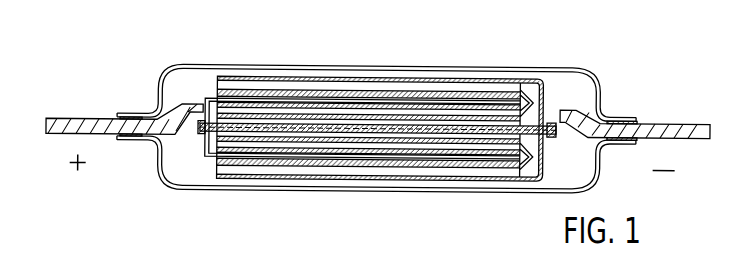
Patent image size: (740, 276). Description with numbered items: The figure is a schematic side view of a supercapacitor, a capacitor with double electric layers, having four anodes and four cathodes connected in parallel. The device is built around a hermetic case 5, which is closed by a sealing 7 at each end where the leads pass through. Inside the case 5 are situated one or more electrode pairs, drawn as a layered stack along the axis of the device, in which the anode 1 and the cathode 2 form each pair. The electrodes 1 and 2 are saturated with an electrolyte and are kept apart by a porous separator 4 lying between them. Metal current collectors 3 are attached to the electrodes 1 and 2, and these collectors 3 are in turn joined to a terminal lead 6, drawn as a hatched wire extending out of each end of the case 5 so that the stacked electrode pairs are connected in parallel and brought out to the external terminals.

The anode 1 is at (363, 90).
The cathode 2 is at (380, 102).
The metal current collector 3 is at (375, 100).
The porous separator 4 is at (377, 89).
The hermetic case 5 is at (376, 109).
The terminal lead 6 is at (378, 108).
The sealing 7 is at (379, 106).